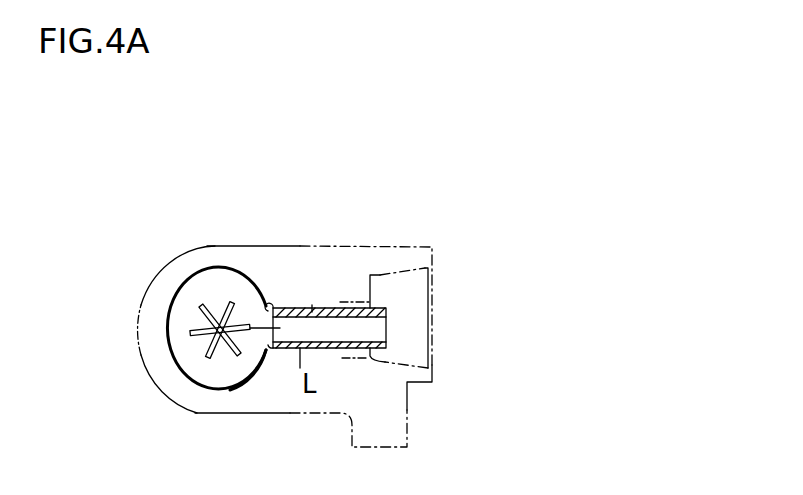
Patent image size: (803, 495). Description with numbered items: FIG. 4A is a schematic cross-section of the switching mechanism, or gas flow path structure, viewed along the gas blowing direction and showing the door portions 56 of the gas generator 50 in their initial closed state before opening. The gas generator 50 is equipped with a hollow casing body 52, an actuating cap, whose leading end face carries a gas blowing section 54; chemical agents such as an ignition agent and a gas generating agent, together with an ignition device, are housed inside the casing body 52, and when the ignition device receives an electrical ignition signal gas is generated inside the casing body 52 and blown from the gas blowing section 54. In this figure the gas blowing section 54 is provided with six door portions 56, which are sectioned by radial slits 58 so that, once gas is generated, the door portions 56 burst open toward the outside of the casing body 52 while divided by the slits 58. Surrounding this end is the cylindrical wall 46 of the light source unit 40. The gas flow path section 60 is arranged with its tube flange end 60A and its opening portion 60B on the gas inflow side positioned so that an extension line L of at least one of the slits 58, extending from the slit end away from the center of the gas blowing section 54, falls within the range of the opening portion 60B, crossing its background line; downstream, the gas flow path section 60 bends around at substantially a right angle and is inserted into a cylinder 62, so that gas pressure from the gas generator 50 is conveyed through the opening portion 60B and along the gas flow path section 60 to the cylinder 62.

The light source unit 40 is at (327, 132).
The cylindrical wall 46 is at (267, 348).
The gas generator 50 is at (237, 266).
The casing body 52 is at (180, 277).
The gas blowing section 54 is at (222, 298).
The door portions 56 is at (250, 340).
The slits 58 is at (245, 300).
The gas flow path section 60 is at (328, 302).
The tube flange end 60A is at (312, 305).
The opening portion 60B is at (271, 309).
The cylinder 62 is at (418, 250).